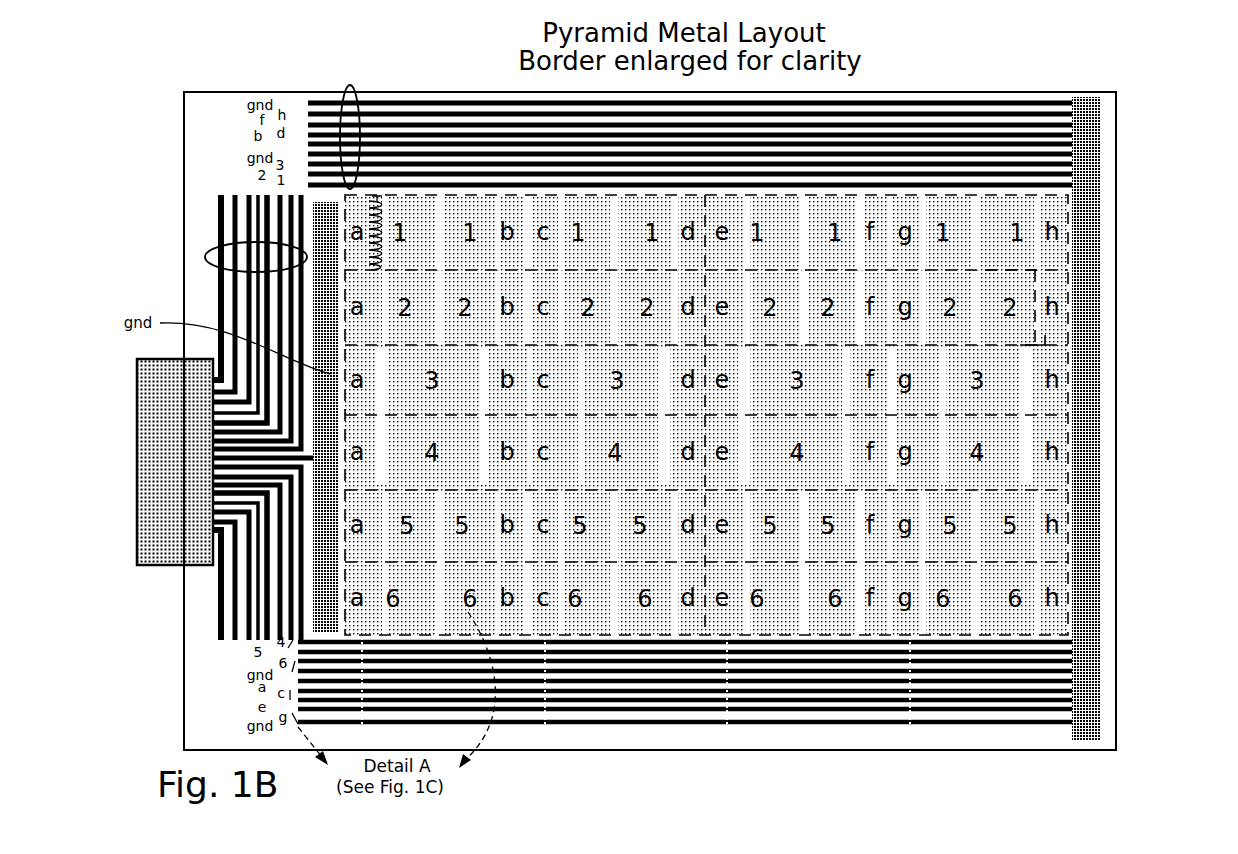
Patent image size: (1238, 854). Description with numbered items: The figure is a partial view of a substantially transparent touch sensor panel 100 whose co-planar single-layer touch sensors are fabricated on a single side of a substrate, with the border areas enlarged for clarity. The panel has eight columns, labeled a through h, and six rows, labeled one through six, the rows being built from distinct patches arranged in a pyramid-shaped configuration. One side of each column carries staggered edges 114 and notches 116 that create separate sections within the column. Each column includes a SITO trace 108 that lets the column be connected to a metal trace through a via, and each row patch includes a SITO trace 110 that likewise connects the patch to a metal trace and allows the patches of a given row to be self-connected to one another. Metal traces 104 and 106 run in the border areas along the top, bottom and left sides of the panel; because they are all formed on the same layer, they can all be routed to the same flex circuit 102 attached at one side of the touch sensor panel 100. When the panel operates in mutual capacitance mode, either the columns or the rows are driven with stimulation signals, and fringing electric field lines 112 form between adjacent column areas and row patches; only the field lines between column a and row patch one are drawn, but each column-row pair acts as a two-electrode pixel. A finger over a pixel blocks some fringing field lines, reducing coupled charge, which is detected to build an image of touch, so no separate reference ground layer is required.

The touch sensor panel 100 is at (1113, 160).
The flex circuit 102 is at (192, 565).
The metal traces 104 is at (343, 90).
The metal traces 106 is at (205, 254).
The SITO trace 108 is at (892, 108).
The SITO trace 110 is at (1007, 173).
The electric field lines 112 is at (378, 198).
The staggered edges 114 is at (1035, 289).
The notches 116 is at (1042, 340).